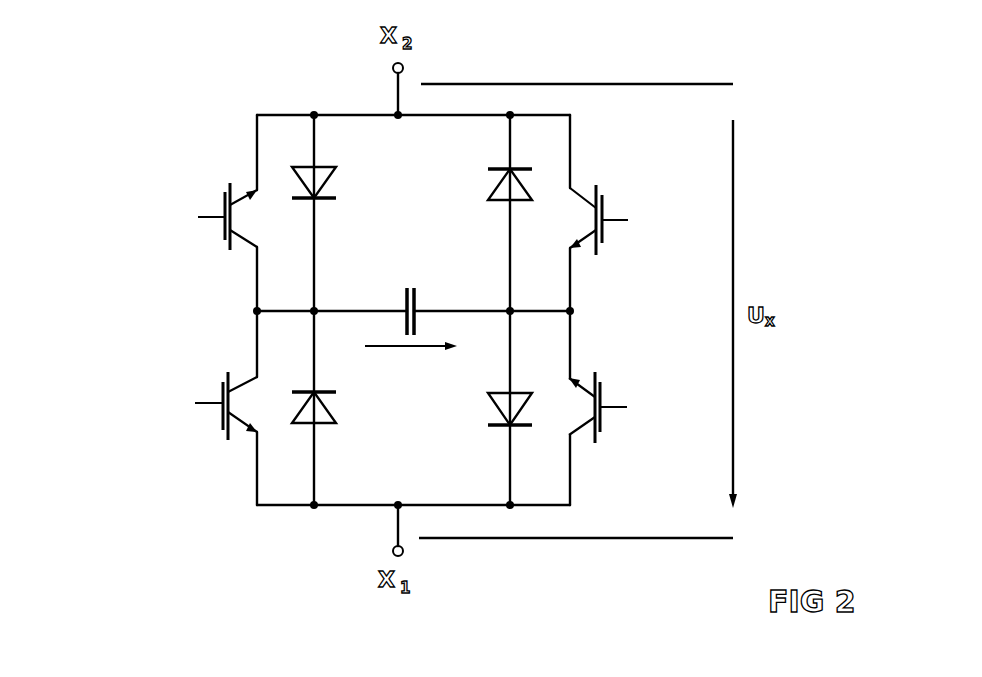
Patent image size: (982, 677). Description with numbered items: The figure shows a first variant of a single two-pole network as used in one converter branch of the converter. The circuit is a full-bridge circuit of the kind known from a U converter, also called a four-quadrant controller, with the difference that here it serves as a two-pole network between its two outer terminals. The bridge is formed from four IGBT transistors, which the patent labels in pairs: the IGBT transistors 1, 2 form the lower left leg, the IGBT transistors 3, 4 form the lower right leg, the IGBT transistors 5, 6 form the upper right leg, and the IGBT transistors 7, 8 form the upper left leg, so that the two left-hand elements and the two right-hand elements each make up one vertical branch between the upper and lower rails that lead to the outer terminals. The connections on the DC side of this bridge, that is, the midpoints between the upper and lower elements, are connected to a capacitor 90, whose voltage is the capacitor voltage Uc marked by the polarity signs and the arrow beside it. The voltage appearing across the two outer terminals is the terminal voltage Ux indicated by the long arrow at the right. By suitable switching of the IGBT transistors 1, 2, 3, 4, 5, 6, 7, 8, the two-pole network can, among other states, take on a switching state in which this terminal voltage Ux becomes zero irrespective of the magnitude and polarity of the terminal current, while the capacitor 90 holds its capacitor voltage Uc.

The IGBT transistor 1 is at (223, 395).
The IGBT transistor 2 is at (325, 423).
The IGBT transistor 3 is at (605, 395).
The IGBT transistor 4 is at (490, 398).
The IGBT transistor 5 is at (604, 207).
The IGBT transistor 6 is at (492, 190).
The IGBT transistor 7 is at (225, 207).
The IGBT transistor 8 is at (325, 167).
The capacitor 90 is at (417, 300).